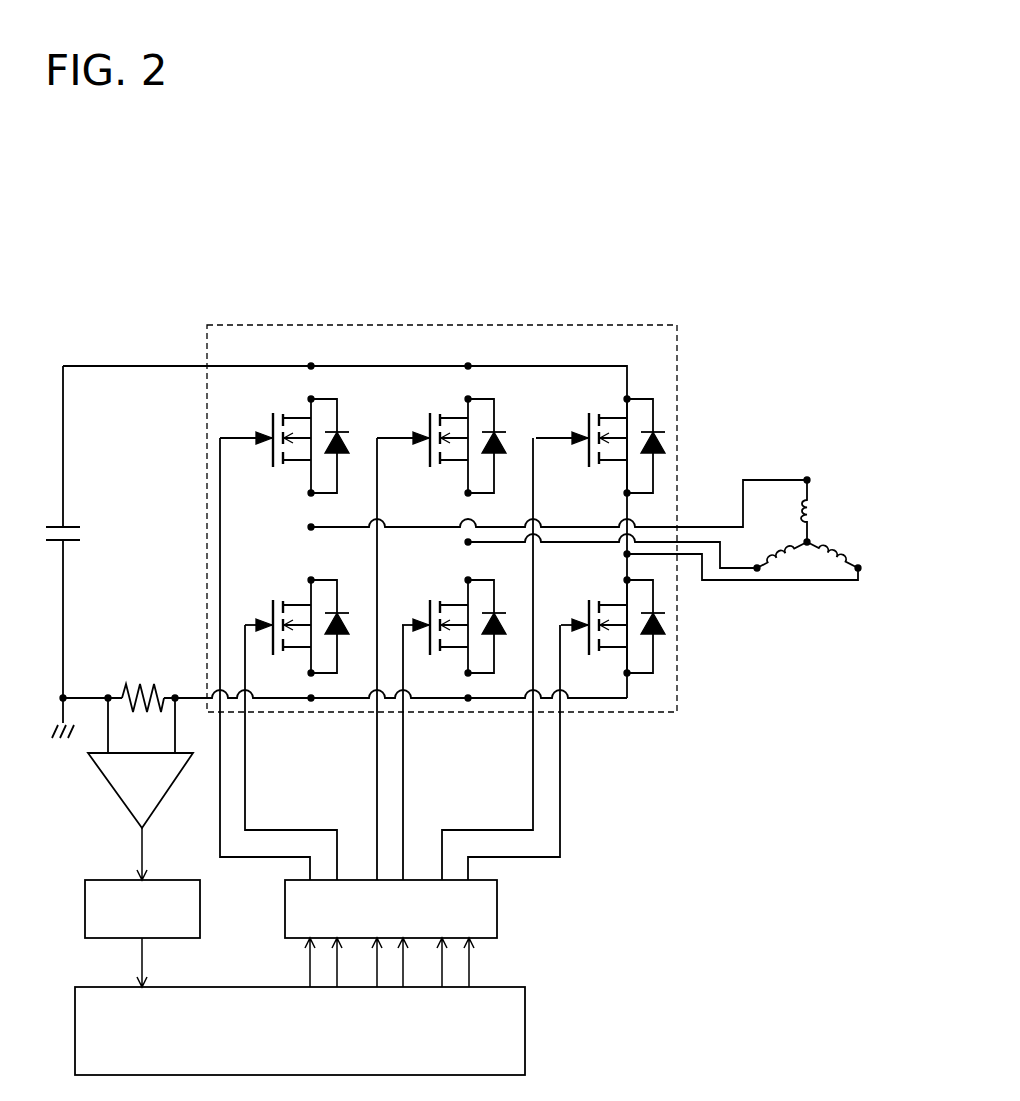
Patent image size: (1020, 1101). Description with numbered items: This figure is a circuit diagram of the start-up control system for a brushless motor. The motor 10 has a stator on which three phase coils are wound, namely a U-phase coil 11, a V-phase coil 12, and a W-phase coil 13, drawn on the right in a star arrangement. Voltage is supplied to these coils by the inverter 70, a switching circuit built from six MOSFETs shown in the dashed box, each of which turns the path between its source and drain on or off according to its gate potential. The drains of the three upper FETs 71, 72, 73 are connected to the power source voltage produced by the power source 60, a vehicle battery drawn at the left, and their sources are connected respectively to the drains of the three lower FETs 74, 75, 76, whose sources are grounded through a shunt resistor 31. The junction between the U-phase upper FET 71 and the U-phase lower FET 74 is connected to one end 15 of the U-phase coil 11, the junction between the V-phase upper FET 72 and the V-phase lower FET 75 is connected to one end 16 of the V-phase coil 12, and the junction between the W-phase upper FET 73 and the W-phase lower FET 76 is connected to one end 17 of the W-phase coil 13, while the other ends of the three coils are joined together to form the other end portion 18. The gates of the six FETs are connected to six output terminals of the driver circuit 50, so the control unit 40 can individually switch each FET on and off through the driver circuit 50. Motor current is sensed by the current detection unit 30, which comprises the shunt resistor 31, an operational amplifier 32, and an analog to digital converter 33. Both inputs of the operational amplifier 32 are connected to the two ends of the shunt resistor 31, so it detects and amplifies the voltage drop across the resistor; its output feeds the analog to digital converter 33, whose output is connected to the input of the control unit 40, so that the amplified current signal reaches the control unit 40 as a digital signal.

The motor 10 is at (818, 537).
The U-phase coil 11 is at (813, 509).
The V-phase coil 12 is at (773, 566).
The W-phase coil 13 is at (836, 564).
The one end of the U-phase coil 15 is at (808, 479).
The one end of the V-phase coil 16 is at (756, 570).
The one end of the W-phase coil 17 is at (859, 566).
The other end portion 18 is at (807, 546).
The current detection unit 30 is at (146, 807).
The shunt resistor 31 is at (146, 690).
The operational amplifier 32 is at (123, 810).
The analog to digital converter 33 is at (200, 908).
The control unit 40 is at (525, 1027).
The driver circuit 50 is at (497, 908).
The power source 60 is at (72, 526).
The inverter 70 is at (428, 323).
The FET(Su+) 71 is at (338, 407).
The FET(Sv+) 72 is at (495, 407).
The FET(Sw+) 73 is at (653, 410).
The FET(Su−) 74 is at (338, 592).
The FET(Sv−) 75 is at (495, 595).
The FET(Sw−) 76 is at (654, 656).